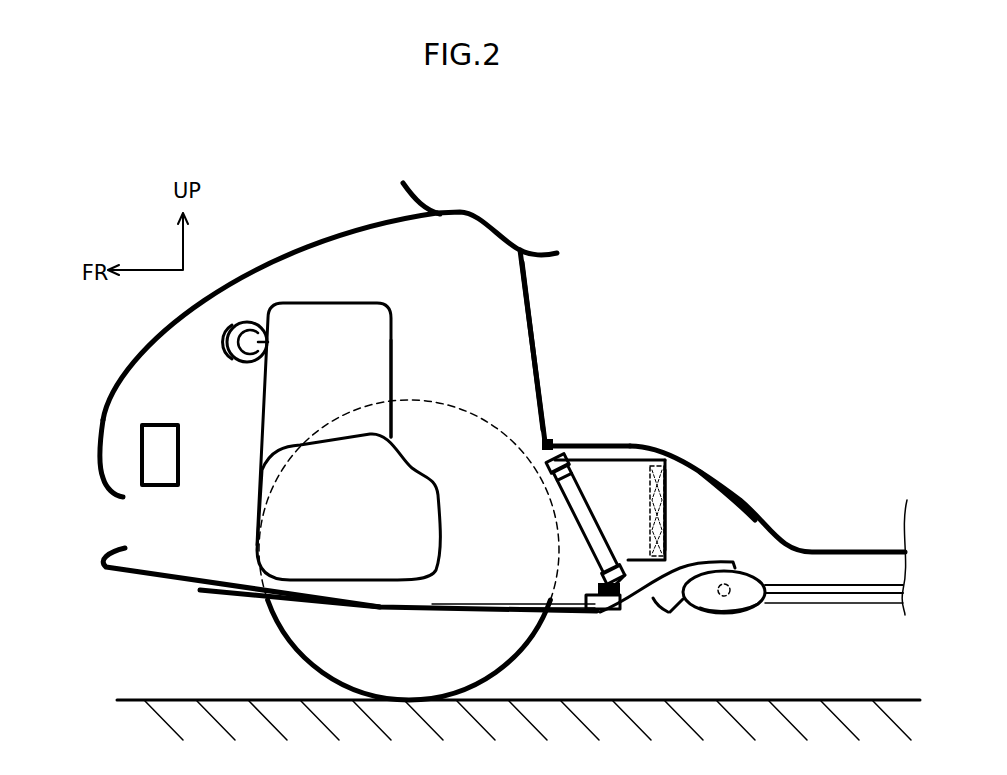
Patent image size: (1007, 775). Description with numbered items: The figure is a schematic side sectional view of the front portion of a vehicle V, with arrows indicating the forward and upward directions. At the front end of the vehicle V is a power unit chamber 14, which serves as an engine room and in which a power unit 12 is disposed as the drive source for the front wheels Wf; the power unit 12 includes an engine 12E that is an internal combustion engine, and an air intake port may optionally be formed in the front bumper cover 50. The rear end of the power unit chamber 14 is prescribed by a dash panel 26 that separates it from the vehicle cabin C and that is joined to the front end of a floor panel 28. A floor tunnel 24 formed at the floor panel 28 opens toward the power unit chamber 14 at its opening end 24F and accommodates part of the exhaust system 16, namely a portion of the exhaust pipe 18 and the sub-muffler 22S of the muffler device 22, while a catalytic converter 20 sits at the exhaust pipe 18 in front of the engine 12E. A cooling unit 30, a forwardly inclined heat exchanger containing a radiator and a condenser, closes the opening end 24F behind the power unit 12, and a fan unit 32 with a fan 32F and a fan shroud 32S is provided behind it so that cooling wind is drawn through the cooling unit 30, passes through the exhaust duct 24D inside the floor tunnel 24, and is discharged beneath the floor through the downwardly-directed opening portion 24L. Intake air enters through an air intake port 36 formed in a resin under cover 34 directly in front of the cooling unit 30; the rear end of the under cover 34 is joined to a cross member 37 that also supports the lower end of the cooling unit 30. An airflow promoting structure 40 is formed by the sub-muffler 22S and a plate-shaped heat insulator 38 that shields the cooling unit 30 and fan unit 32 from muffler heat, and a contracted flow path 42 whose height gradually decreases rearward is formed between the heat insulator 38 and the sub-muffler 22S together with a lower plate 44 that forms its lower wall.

The vehicle V is at (318, 205).
The power unit chamber 14 is at (423, 283).
The power unit 12 is at (393, 334).
The engine 12E is at (392, 366).
The exhaust pipe 18 is at (260, 342).
The catalytic converter 20 is at (226, 350).
The front bumper cover 50 is at (95, 447).
The opening end 24F is at (528, 458).
The vehicle cabin C is at (697, 258).
The dash panel 26 is at (541, 322).
The fan unit 32 is at (639, 441).
The fan shroud 32S is at (602, 462).
The fan 32F is at (672, 463).
The floor tunnel 24 is at (694, 466).
The floor panel 28 is at (746, 491).
The exhaust system 16 is at (765, 568).
The exhaust duct 24D is at (676, 508).
The heat insulator 38 is at (680, 576).
The muffler device 22 is at (742, 568).
The cooling unit 30 is at (580, 535).
The under cover 34 is at (330, 608).
The front wheels Wf is at (305, 657).
The air intake port 36 is at (491, 610).
The cross member 37 is at (600, 613).
The contracted flow path 42 is at (653, 602).
The airflow promoting structure 40 is at (681, 626).
The lower plate 44 is at (683, 603).
The sub-muffler 22S is at (760, 606).
The downwardly-directed opening portion 24L is at (882, 604).